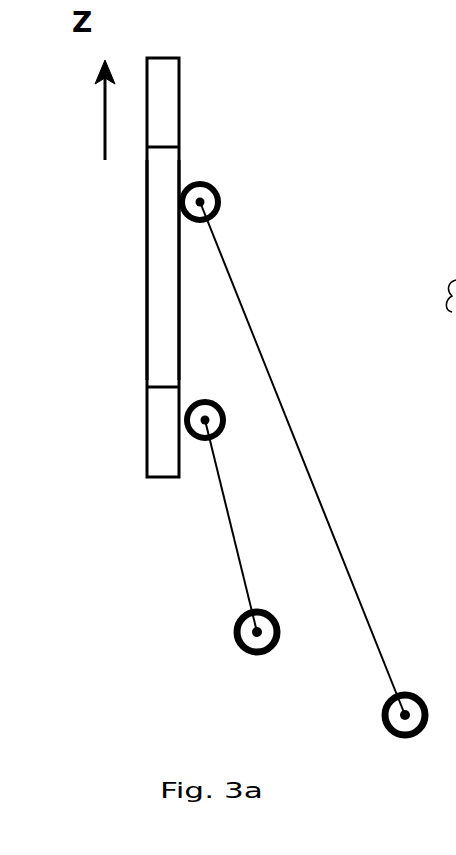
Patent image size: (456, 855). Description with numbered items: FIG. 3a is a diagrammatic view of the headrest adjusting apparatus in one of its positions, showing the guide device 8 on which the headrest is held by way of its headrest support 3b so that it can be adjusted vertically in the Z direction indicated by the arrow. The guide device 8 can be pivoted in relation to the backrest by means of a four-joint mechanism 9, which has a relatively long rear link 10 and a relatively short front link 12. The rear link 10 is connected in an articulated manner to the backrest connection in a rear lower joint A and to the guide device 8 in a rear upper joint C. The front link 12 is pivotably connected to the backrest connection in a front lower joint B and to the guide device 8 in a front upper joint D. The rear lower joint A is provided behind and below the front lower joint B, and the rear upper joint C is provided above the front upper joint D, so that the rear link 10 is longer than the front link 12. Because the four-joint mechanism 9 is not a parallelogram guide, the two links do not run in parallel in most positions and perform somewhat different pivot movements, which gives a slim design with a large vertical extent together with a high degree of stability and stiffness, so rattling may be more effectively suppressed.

The headrest support 3b is at (181, 75).
The guide device 8 is at (146, 278).
The four-joint mechanism 9 is at (297, 323).
The rear link 10 is at (325, 502).
The front link 12 is at (228, 522).
The rear lower joint A is at (406, 693).
The front lower joint B is at (257, 655).
The rear upper joint C is at (216, 202).
The front upper joint D is at (218, 435).